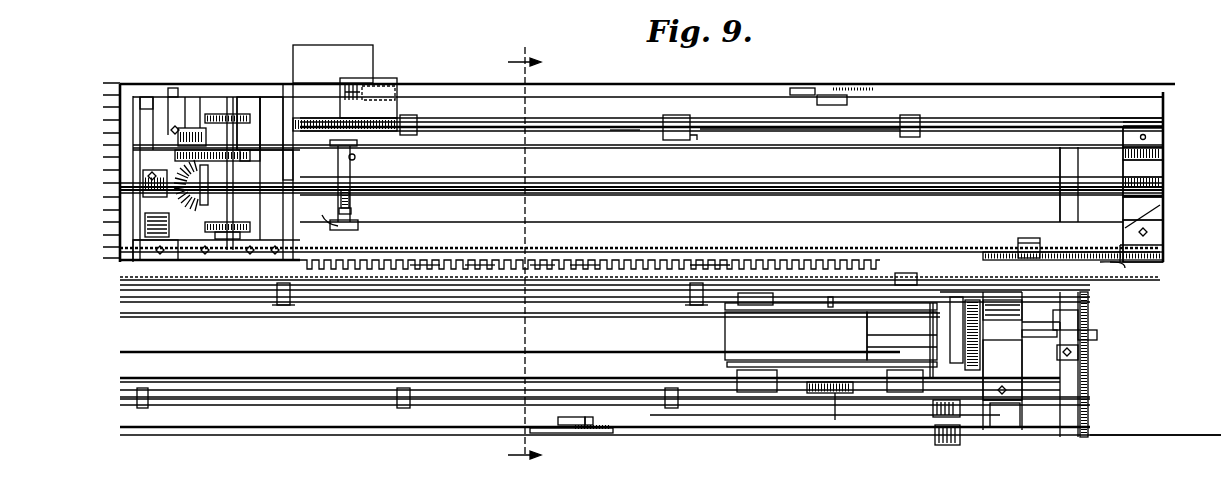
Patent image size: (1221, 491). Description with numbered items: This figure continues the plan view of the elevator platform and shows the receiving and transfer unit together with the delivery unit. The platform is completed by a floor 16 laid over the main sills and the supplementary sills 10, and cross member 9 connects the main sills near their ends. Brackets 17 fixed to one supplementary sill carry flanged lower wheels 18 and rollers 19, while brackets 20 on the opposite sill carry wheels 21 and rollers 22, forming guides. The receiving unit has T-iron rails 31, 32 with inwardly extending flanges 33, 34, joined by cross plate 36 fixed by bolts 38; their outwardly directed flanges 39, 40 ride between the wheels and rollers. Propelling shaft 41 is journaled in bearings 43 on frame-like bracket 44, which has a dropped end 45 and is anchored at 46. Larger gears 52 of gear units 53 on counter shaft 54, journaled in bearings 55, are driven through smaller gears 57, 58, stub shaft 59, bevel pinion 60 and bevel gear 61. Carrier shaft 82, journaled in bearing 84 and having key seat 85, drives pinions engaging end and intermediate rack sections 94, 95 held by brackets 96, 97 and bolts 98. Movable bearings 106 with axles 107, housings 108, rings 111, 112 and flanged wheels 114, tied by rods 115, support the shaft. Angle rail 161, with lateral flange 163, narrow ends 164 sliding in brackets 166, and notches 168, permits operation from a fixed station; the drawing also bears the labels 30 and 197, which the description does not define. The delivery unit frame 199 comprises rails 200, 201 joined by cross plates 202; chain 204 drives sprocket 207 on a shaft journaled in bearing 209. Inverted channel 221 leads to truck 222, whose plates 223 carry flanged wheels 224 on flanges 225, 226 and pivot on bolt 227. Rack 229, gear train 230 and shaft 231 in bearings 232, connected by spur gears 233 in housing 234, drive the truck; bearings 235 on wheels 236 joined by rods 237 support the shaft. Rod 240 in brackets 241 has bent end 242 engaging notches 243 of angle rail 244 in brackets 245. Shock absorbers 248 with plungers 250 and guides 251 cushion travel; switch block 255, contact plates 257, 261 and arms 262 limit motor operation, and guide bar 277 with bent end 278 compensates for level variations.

The cross member 9 is at (1060, 167).
The supplementary sill 10 is at (524, 263).
The floor 16 is at (1170, 437).
The bracket 17 is at (797, 95).
The flanged lower wheel 18 is at (865, 94).
The roller 19 is at (842, 105).
The bracket 20 is at (556, 431).
The wheel 21 is at (605, 430).
The roller 22 is at (575, 428).
The frame 30 is at (1052, 418).
The T-iron rail 31 is at (1160, 118).
The T-iron rail 32 is at (1160, 230).
The inwardly extending flange 33 is at (1146, 137).
The inwardly extending flange 34 is at (1160, 210).
The cross plate 36 is at (1160, 192).
The bolt 38 is at (1160, 149).
The outwardly directed flange 39 is at (1160, 97).
The outwardly directed flange 40 is at (1125, 266).
The shaft 41 is at (136, 178).
The bearing 43 is at (265, 170).
The frame-like bracket 44 is at (290, 124).
The dropped end 45 is at (175, 248).
The anchorage 46 is at (173, 92).
The larger gear 52 is at (262, 118).
The gear unit 53 is at (238, 120).
The counter shaft 54 is at (230, 207).
The bearing 55 is at (226, 100).
The smaller gear 57 is at (238, 152).
The smaller gear 58 is at (178, 128).
The stub shaft 59 is at (192, 126).
The bevel pinion 60 is at (235, 162).
The bevel gear 61 is at (204, 200).
The shaft 82 is at (680, 182).
The bearing 84 is at (1158, 177).
The key seat 85 is at (735, 182).
The end rack section 94 is at (755, 128).
The intermediate rack section 95 is at (615, 135).
The bracket 96 is at (920, 118).
The bracket 97 is at (415, 118).
The bolt 98 is at (680, 118).
The movable bearing 106 is at (356, 157).
The axle 107 is at (352, 212).
The housing 108 is at (350, 200).
The ring 111 is at (335, 147).
The ring 112 is at (351, 168).
The flanged wheel 114 is at (358, 226).
The parallel rod 115 is at (326, 222).
The rail 161 is at (540, 262).
The lateral flange 163 is at (580, 262).
The narrow end 164 is at (1020, 238).
The bracket 166 is at (1038, 240).
The notch 168 is at (475, 262).
The bar 197 is at (420, 262).
The frame 199 is at (1020, 427).
The T-iron rail 200 is at (1022, 294).
The T-iron rail 201 is at (1020, 400).
The cross plate 202 is at (1010, 370).
The chain 204 is at (1088, 380).
The sprocket 207 is at (1097, 335).
The bearing 209 is at (1078, 322).
The inverted channel 221 is at (335, 355).
The truck 222 is at (718, 364).
The plate 223 is at (800, 392).
The flanged wheel 224 is at (760, 305).
The inwardly directed flange 225 is at (722, 310).
The inwardly directed flange 226 is at (728, 385).
The shaft or bolt 227 is at (830, 307).
The rack 229 is at (410, 380).
The gear train 230 is at (835, 420).
The shaft 231 is at (867, 338).
The bearing 232 is at (1022, 314).
The spur gear 233 is at (1006, 390).
The housing 234 is at (972, 300).
The bearing 235 is at (918, 395).
The flanged wheel 236 is at (950, 405).
The rod 237 is at (873, 352).
The rod 240 is at (515, 295).
The bearing bracket 241 is at (694, 305).
The bent end 242 is at (1080, 290).
The notch 243 is at (625, 262).
The angle rail 244 is at (705, 262).
The bracket 245 is at (905, 273).
The shock absorber 248 is at (1060, 337).
The plunger 250 is at (1078, 356).
The guide 251 is at (1065, 310).
The switch block 255 is at (373, 52).
The contact plate 257 is at (397, 90).
The contact plate 261 is at (935, 445).
The roller-carrying arm 262 is at (378, 86).
The guide bar 277 is at (1160, 264).
The retractively bent end 278 is at (1160, 250).